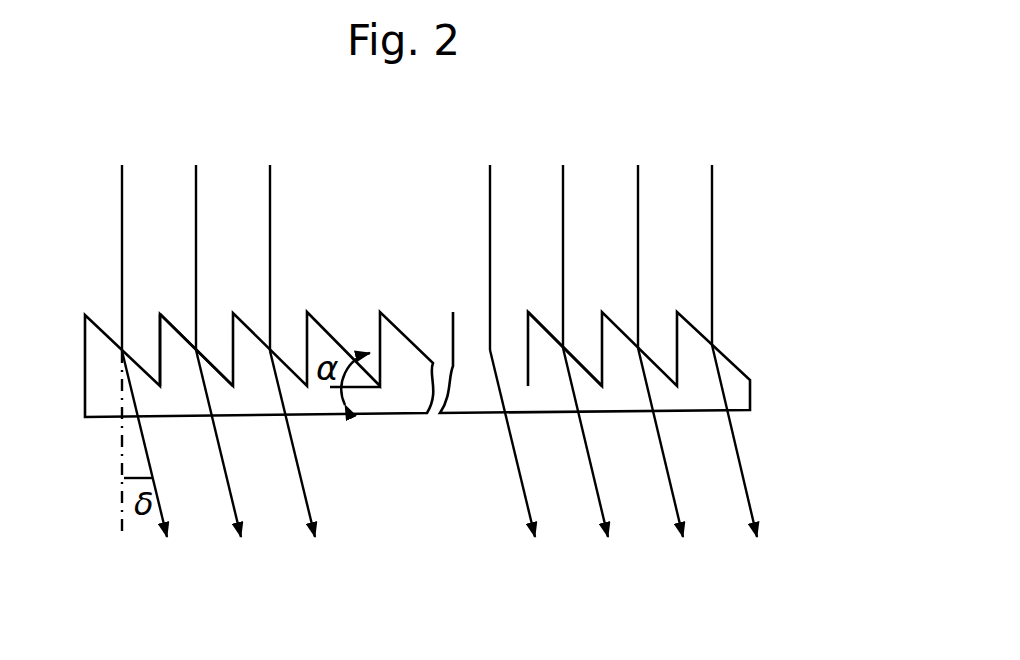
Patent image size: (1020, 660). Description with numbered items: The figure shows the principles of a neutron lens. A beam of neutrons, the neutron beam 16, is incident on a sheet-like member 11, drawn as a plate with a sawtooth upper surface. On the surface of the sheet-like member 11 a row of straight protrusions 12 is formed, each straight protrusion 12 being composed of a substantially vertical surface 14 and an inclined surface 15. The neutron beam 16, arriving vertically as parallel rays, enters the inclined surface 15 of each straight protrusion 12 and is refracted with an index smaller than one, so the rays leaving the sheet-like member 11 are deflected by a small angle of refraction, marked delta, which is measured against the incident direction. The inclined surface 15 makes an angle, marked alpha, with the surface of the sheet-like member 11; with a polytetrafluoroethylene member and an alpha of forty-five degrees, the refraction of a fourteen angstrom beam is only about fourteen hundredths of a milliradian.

The sheet-like member 11 is at (733, 370).
The straight protrusion 12 is at (528, 310).
The substantially vertical surface 14 is at (150, 328).
The inclined surface 15 is at (163, 316).
The neutron beam 16 is at (712, 195).